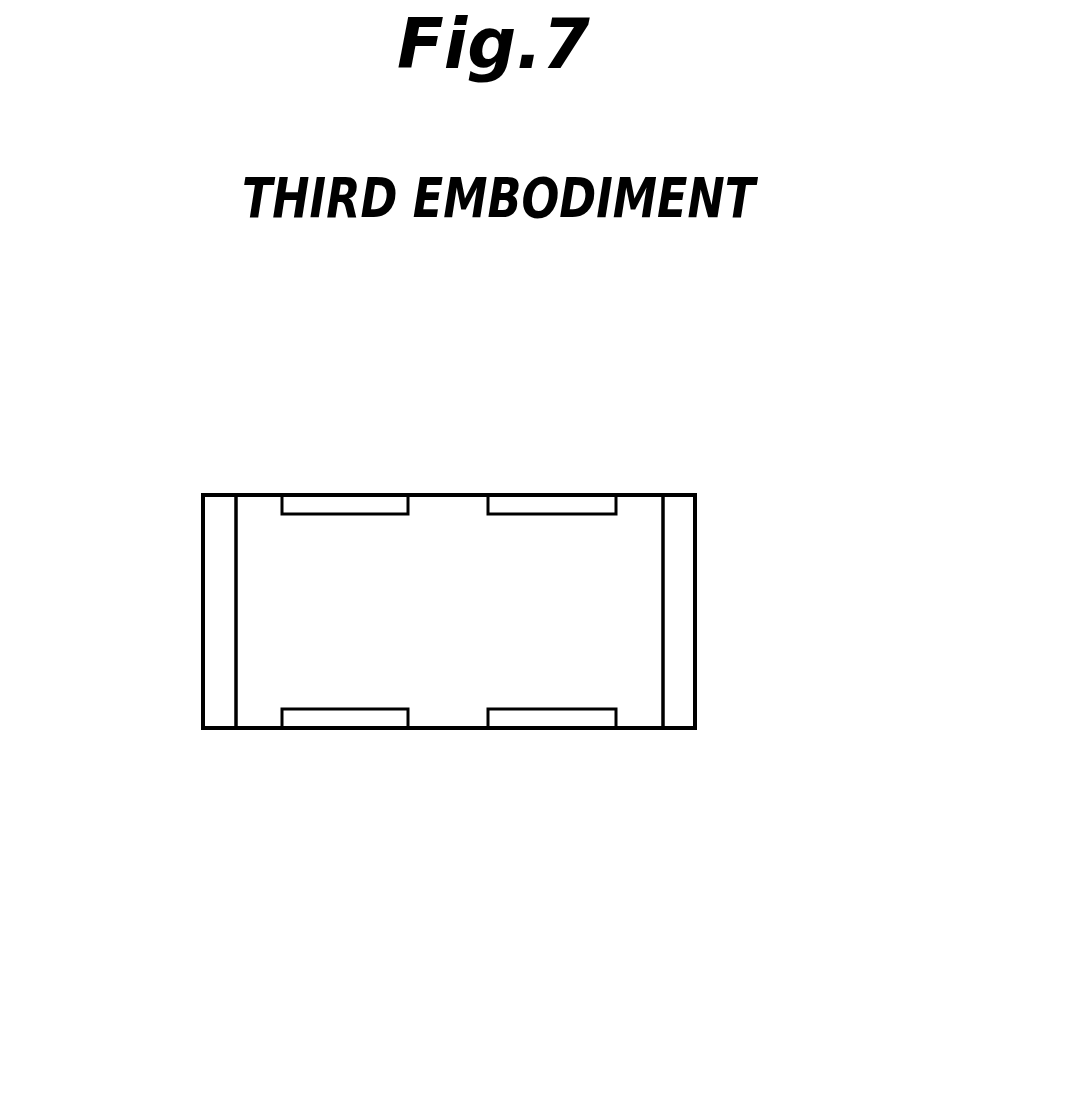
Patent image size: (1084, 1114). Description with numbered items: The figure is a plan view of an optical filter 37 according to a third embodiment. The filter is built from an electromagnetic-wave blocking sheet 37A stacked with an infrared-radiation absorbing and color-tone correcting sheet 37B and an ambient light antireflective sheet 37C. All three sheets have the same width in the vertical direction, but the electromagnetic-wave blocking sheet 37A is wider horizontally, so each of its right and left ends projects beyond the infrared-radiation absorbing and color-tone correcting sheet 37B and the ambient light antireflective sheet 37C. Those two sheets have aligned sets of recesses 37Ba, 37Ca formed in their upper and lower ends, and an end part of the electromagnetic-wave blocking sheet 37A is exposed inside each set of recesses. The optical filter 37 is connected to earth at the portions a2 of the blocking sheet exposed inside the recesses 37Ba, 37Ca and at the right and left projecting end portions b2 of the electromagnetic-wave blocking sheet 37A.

The optical filter 37 is at (494, 622).
The electromagnetic-wave blocking sheet 37A is at (698, 533).
The infrared-radiation absorbing and color-tone correcting sheet 37B is at (586, 611).
The ambient light antireflective sheet 37C is at (628, 597).
The recess 37Ba is at (465, 622).
The recess 37Ca is at (465, 622).
The portion a2 is at (350, 493).
The projecting end portion b2 is at (212, 663).